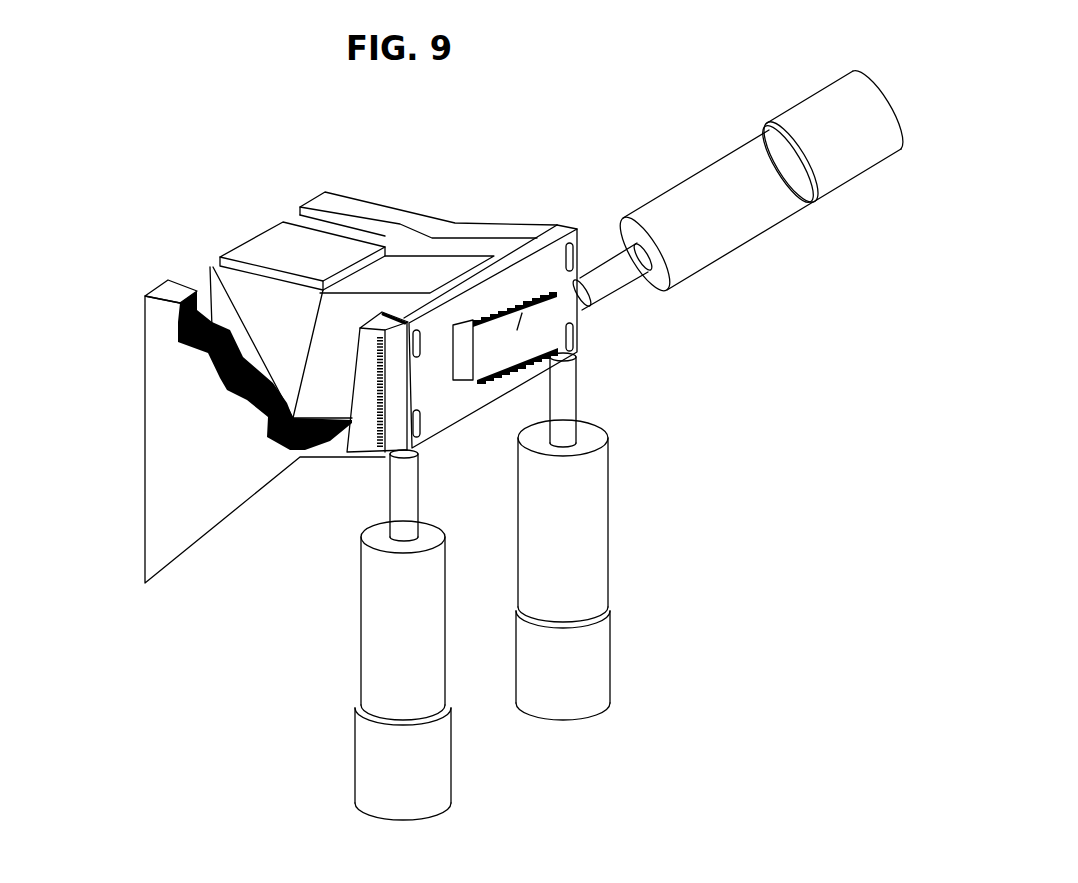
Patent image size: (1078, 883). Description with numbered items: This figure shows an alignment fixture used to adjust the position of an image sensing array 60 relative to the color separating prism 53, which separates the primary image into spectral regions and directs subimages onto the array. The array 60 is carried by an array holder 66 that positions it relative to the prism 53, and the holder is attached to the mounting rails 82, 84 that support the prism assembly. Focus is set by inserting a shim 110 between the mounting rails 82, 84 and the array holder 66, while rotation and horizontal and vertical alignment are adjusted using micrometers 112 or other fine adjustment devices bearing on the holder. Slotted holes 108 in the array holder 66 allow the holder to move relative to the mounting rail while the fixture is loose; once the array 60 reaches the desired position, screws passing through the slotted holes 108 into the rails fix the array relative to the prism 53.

The color separating prism 53 is at (252, 295).
The image sensing array 60 is at (537, 287).
The array holder 66 is at (581, 322).
The mounting rail 82 is at (145, 430).
The mounting rail 84 is at (405, 212).
The slotted hole 108 is at (418, 333).
The shim 110 is at (368, 421).
The micrometer 112 is at (763, 234).